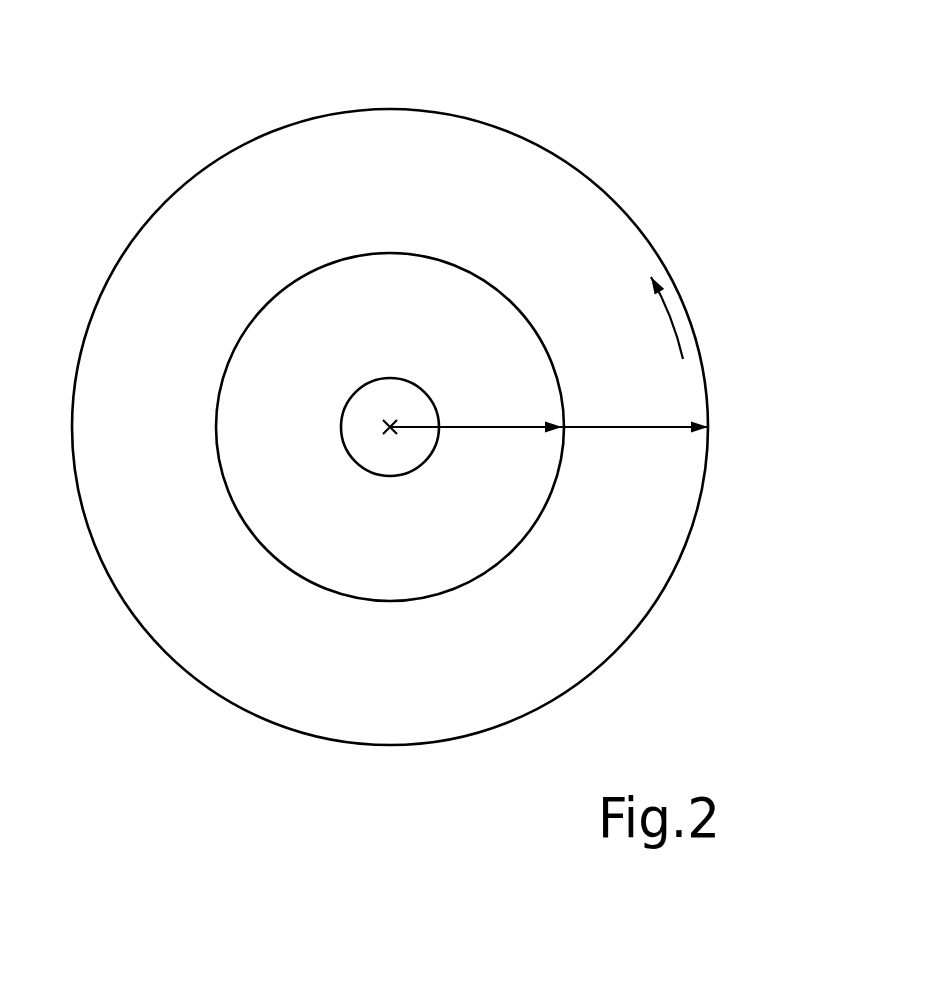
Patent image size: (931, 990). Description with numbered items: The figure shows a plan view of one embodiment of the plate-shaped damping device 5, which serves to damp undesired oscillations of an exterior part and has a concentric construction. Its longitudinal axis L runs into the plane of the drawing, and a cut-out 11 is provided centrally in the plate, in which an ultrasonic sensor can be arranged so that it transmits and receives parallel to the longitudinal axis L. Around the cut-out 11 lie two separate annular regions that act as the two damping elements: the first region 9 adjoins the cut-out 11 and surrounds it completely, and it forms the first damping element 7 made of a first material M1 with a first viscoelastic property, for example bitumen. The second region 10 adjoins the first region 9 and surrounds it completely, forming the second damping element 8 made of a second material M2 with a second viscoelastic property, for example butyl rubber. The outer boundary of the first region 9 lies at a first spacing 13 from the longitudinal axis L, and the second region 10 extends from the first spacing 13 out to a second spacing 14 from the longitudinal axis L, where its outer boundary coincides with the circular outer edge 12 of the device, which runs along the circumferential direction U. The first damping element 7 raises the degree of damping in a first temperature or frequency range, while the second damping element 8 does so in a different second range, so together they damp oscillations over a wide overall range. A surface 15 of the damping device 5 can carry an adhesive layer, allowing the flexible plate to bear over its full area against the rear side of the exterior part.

The damping device 5 is at (697, 222).
The first damping element 7 is at (388, 303).
The second damping element 8 is at (562, 230).
The first region 9 is at (260, 362).
The second region 10 is at (138, 600).
The cut-out 11 is at (383, 420).
The outer edge 12 is at (698, 347).
The first spacing 13 is at (482, 424).
The second spacing 14 is at (610, 427).
The surface 15 is at (602, 573).
The longitudinal axis L is at (392, 430).
The circumferential direction U is at (685, 312).
The first material M1 is at (303, 441).
The second material M2 is at (167, 441).